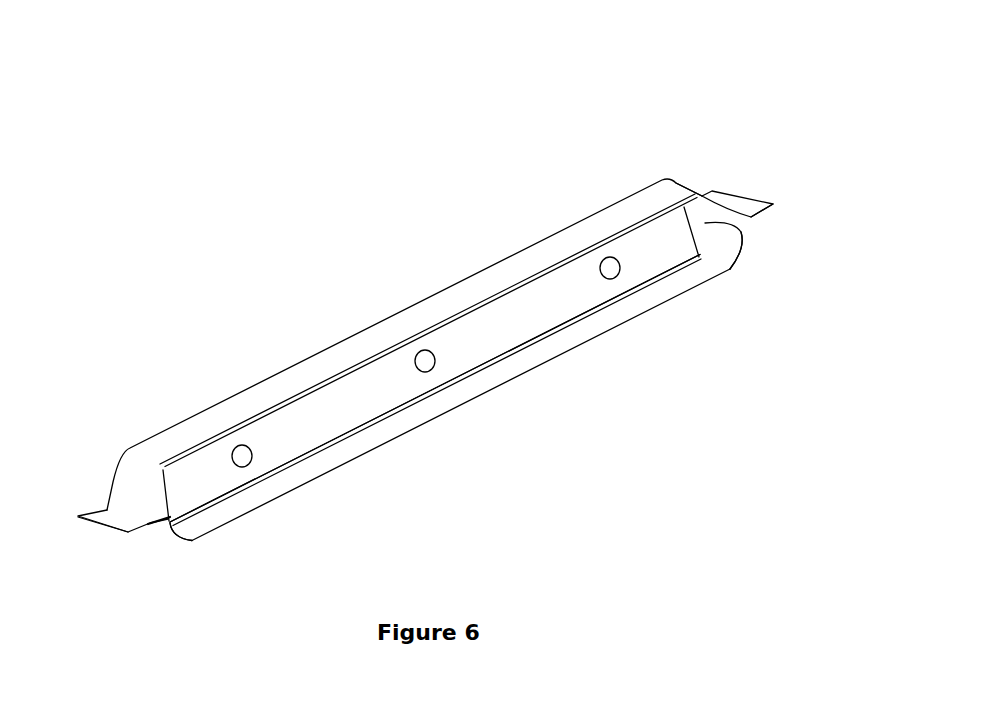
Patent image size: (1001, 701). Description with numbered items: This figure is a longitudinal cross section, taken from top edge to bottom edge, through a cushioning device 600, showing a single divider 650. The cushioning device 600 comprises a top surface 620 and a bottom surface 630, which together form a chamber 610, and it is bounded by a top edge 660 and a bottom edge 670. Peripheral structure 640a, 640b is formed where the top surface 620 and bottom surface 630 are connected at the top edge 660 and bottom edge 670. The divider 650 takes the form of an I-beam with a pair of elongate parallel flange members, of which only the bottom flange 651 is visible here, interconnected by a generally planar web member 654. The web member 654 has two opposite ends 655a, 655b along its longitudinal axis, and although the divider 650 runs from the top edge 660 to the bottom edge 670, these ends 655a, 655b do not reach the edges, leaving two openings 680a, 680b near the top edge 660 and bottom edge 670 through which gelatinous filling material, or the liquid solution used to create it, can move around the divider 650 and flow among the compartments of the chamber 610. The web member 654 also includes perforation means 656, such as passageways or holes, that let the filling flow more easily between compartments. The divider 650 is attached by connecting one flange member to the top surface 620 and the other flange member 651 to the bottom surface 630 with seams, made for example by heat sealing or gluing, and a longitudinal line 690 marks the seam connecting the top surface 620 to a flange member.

The cushioning device 600 is at (453, 362).
The chamber 610 is at (245, 503).
The top surface 620 is at (190, 418).
The bottom surface 630 is at (503, 382).
The peripheral structure 640a is at (113, 512).
The peripheral structure 640b is at (728, 193).
The divider 650 is at (583, 297).
The bottom flange 651 is at (553, 330).
The web member 654 is at (300, 427).
The opposite end of web member 655a is at (166, 528).
The opposite end of web member 655b is at (690, 232).
The perforation means 656 is at (250, 462).
The top edge 660 is at (101, 535).
The bottom edge 670 is at (762, 197).
The opening 680a is at (198, 539).
The opening 680b is at (740, 236).
The longitudinal line 690 is at (342, 367).